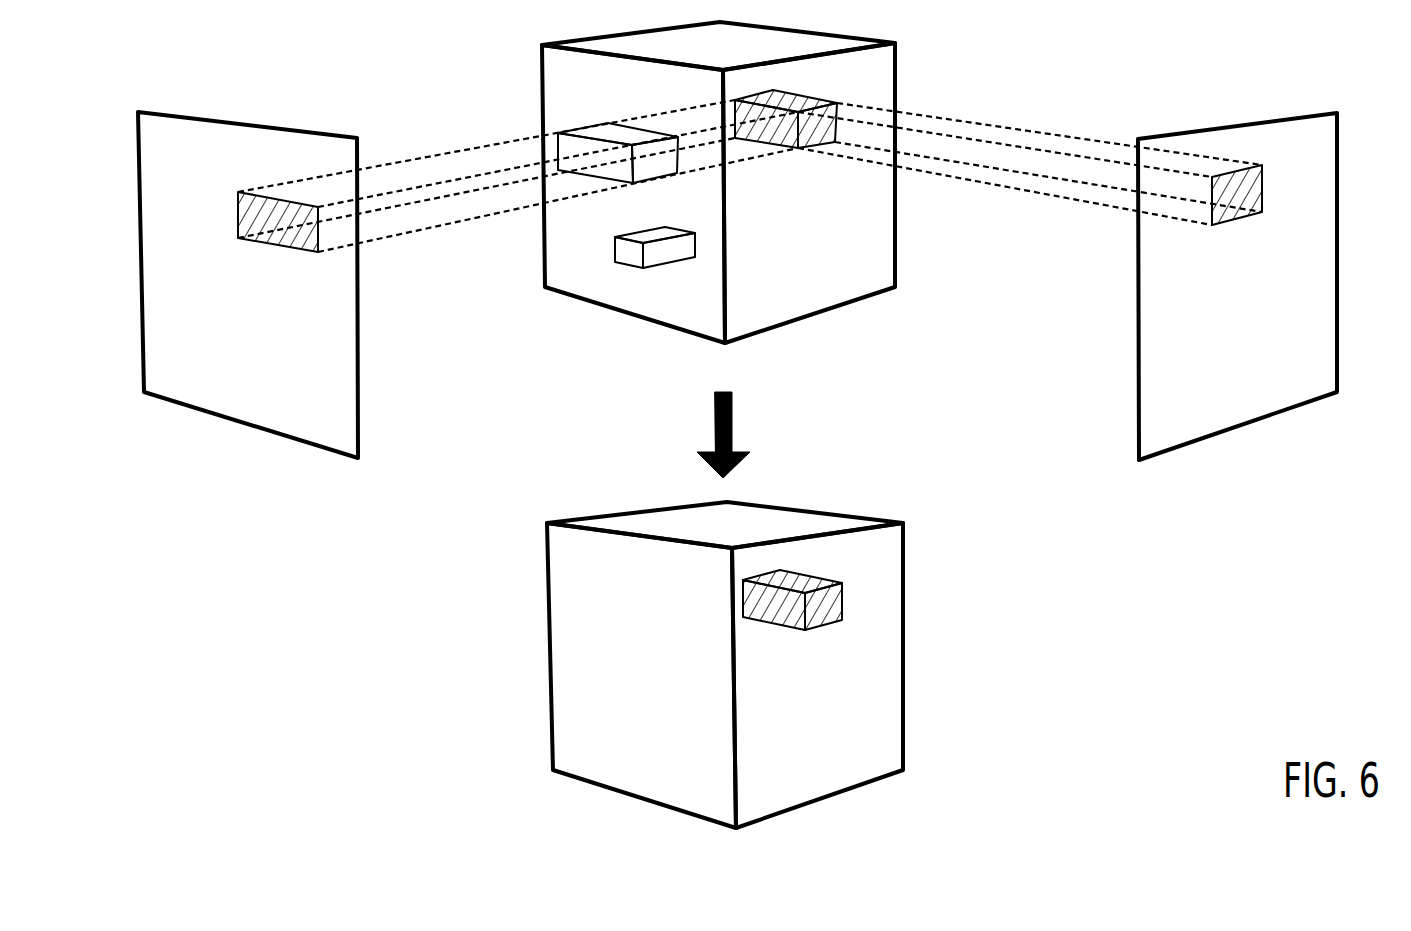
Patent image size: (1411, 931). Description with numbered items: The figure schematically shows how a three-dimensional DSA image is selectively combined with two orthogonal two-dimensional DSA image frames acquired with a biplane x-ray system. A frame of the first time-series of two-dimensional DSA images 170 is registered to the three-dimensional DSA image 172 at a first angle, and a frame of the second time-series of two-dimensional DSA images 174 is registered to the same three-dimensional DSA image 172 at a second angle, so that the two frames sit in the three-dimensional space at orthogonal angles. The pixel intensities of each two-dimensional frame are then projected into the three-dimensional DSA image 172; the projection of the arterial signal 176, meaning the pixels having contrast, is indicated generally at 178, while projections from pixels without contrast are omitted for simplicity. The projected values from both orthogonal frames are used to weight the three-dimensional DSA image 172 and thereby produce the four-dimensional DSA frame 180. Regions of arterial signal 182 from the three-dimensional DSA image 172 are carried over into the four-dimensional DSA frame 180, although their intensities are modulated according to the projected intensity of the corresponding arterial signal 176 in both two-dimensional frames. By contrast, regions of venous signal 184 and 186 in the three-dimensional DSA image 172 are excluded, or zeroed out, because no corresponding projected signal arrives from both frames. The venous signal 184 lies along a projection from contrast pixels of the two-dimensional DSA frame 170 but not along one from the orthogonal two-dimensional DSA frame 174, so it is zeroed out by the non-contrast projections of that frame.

The first time-series of 2D-DSA images 170 is at (198, 119).
The 3D-DSA image 172 is at (897, 67).
The second time-series of 2D-DSA images 174 is at (1258, 121).
The arterial signal 176 is at (235, 232).
The projection of arterial signal 178 is at (446, 126).
The 4D-DSA frame 180 is at (907, 545).
The regions of arterial signal 182 is at (818, 100).
The region of venous signal 184 is at (570, 128).
The region of venous signal 186 is at (655, 268).